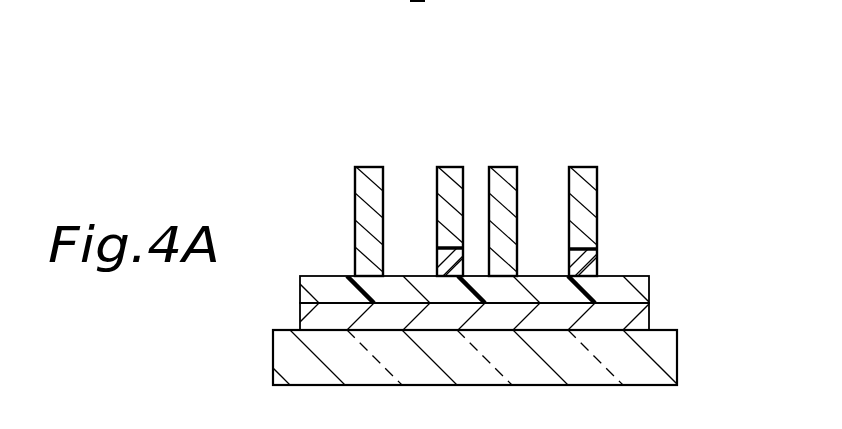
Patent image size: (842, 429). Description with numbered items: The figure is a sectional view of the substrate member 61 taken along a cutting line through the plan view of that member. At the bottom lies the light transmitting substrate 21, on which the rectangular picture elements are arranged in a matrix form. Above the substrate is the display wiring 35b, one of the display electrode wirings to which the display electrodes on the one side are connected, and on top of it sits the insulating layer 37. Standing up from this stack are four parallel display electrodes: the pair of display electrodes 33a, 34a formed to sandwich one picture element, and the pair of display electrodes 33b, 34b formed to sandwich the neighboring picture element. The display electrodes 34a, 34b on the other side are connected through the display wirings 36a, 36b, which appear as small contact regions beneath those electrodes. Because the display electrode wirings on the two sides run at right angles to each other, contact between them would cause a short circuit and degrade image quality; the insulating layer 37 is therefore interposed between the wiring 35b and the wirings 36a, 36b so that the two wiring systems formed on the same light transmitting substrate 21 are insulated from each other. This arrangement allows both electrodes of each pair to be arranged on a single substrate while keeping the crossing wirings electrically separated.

The light transmitting substrate 21 is at (660, 353).
The display wiring 35b is at (640, 316).
The insulating layer 37 is at (643, 287).
The display electrode 33a is at (362, 175).
The display electrode 34a is at (447, 173).
The display electrode 33b is at (503, 175).
The display electrode 34b is at (585, 173).
The display wiring 36a is at (437, 256).
The display wiring 36b is at (598, 267).
The substrate member 61 is at (650, 153).